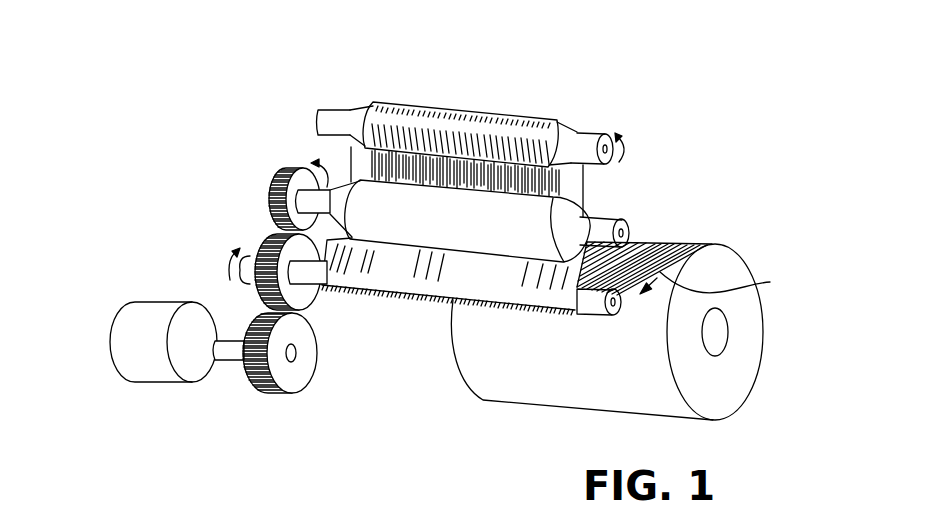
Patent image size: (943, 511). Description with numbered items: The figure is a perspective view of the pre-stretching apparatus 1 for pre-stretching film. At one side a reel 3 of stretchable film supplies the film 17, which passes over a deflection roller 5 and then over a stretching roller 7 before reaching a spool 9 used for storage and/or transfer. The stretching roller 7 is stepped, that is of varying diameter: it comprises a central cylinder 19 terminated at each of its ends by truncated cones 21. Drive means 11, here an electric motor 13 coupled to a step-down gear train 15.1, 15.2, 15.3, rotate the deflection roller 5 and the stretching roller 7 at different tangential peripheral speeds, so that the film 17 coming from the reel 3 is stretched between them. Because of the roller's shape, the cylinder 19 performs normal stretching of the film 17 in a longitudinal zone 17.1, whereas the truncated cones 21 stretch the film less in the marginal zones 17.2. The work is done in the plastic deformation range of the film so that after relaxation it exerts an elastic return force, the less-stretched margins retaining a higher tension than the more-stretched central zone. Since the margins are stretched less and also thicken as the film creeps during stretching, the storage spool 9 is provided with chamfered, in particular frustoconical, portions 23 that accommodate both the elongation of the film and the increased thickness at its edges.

The pre-stretching apparatus 1 is at (456, 403).
The reel 3 is at (753, 264).
The deflection roller 5 is at (630, 312).
The stretching roller 7 is at (590, 222).
The spool 9 is at (333, 118).
The drive means 11 is at (175, 411).
The electric motor 13 is at (155, 312).
The step-down gear train 15.1 is at (318, 365).
The step-down gear train 15.2 is at (246, 286).
The step-down gear train 15.3 is at (268, 213).
The film 17 is at (770, 282).
The longitudinal zone 17.1 is at (463, 156).
The zones 17.2 is at (350, 148).
The cylinder 19 is at (586, 190).
The truncated cones 21 is at (357, 152).
The chamfered portions 23 is at (355, 104).